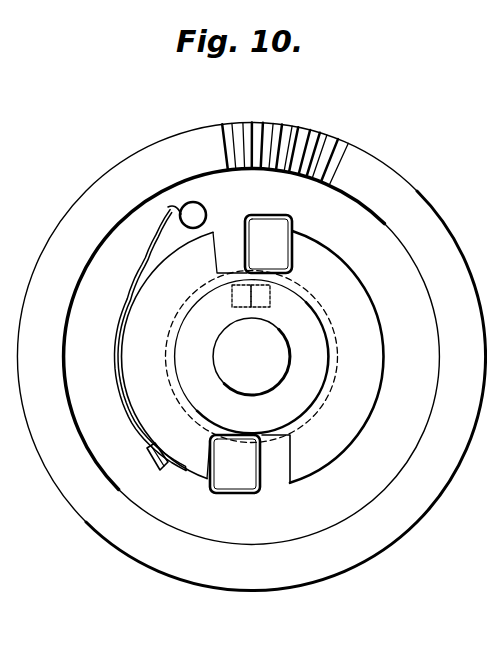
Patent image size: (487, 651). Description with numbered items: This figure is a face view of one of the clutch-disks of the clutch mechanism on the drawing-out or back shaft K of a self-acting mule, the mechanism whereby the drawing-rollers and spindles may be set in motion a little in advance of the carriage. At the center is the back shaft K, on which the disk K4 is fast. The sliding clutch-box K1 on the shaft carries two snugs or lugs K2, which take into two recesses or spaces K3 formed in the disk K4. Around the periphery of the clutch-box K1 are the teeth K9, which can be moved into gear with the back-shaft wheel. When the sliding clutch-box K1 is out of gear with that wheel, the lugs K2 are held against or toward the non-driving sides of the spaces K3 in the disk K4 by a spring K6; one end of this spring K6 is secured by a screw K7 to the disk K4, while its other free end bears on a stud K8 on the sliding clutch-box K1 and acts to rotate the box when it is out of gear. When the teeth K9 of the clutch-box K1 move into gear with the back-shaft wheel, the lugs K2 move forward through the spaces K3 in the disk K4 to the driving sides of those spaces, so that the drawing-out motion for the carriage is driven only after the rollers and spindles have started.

The drawing-out or back shaft K is at (251, 356).
The sliding clutch-box K1 is at (252, 357).
The snugs or lugs K2 is at (251, 354).
The recesses or spaces K3 is at (212, 267).
The disk K4 is at (383, 333).
The spring K6 is at (146, 263).
The screw K7 is at (165, 474).
The stud K8 is at (194, 214).
The teeth K9 is at (289, 137).